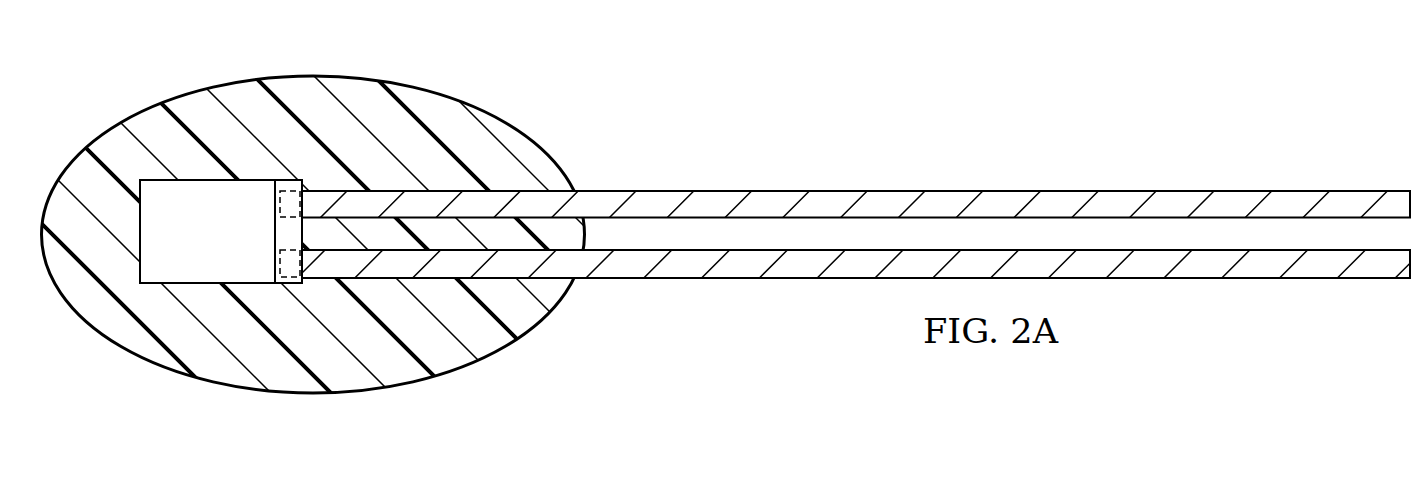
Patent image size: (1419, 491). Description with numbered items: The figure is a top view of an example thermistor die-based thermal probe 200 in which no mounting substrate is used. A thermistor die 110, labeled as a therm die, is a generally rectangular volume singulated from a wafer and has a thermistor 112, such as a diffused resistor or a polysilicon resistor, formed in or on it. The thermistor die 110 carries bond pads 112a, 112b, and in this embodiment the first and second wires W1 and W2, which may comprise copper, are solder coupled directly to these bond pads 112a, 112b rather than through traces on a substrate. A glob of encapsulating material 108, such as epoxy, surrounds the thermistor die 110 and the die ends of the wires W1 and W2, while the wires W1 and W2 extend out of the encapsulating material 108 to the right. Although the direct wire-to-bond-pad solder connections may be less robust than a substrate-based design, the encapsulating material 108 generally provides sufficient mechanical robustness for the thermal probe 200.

The thermistor die-based thermal probe 200 is at (709, 245).
The encapsulating material 108 is at (107, 143).
The thermistor die 110 is at (173, 273).
The thermistor 112 is at (246, 314).
The bond pad 112a is at (282, 212).
The bond pad 112b is at (290, 268).
The first wire W1 is at (858, 295).
The second wire W2 is at (840, 179).